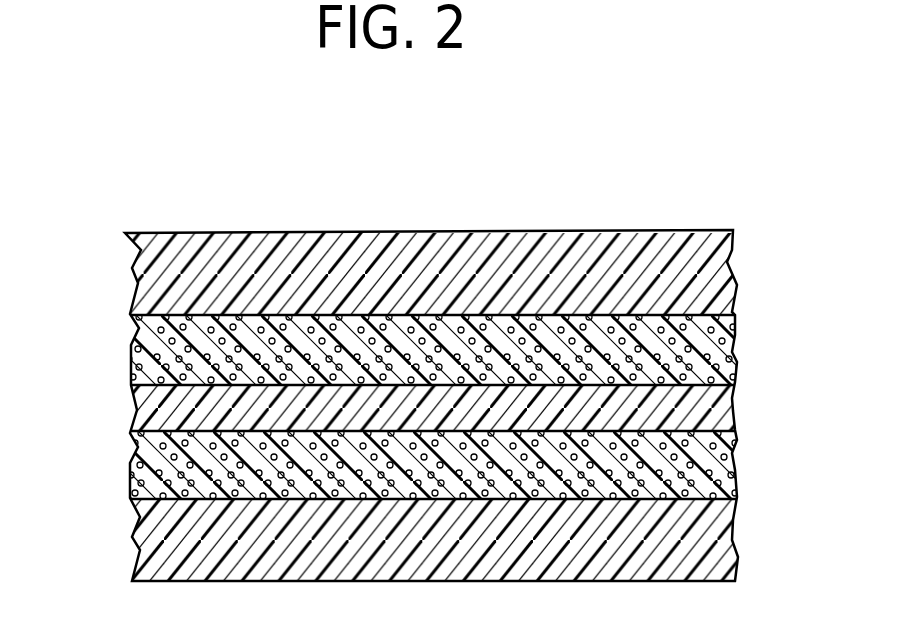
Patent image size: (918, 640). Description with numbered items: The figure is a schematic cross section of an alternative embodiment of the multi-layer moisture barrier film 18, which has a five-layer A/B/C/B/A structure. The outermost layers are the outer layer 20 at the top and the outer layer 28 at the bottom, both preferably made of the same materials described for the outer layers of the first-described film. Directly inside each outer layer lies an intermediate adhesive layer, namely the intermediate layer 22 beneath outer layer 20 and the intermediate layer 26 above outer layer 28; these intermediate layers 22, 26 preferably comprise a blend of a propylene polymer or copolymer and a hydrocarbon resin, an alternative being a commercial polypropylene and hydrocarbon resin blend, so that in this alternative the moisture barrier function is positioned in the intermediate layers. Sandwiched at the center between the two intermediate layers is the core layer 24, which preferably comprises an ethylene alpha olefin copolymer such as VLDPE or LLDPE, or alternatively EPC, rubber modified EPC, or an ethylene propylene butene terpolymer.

The multi-layer moisture barrier film 18 is at (267, 158).
The outer layer 20 is at (141, 268).
The intermediate layer 22 is at (735, 361).
The core layer 24 is at (137, 410).
The intermediate layer 26 is at (738, 475).
The outer layer 28 is at (142, 543).